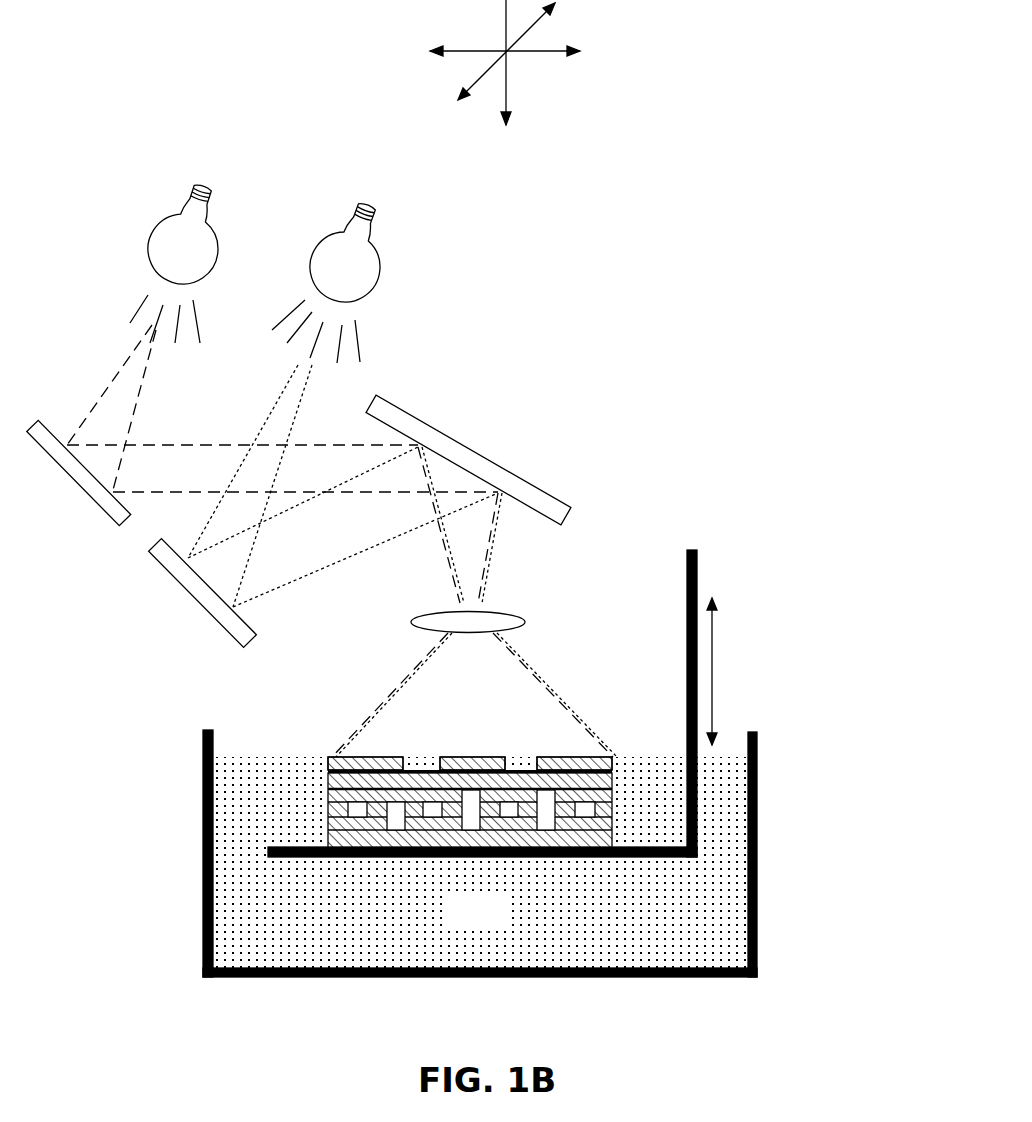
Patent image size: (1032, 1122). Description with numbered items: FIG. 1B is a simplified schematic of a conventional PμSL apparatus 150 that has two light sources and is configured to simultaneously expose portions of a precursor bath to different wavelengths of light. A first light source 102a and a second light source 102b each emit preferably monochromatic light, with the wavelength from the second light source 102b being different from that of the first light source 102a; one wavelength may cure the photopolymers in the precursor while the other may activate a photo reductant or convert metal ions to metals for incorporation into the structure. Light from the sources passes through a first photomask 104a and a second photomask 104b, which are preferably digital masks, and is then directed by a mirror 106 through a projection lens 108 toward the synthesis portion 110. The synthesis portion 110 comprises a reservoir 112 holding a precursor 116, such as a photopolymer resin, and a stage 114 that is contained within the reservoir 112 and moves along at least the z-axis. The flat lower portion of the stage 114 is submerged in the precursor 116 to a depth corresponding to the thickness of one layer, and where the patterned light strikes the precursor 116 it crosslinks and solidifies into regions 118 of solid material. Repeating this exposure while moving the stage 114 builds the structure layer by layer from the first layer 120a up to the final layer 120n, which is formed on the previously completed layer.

The apparatus 150 is at (476, 488).
The first light source 102a is at (183, 259).
The second light source 102b is at (336, 278).
The first photomask 104a is at (110, 508).
The second photomask 104b is at (197, 594).
The mirror 106 is at (478, 458).
The projection lens 108 is at (545, 620).
The synthesis portion 110 is at (565, 747).
The reservoir 112 is at (757, 748).
The stage 114 is at (697, 568).
The precursor 116 is at (459, 926).
The regions 118 is at (437, 757).
The layer 120a is at (300, 847).
The layer 120n is at (314, 765).